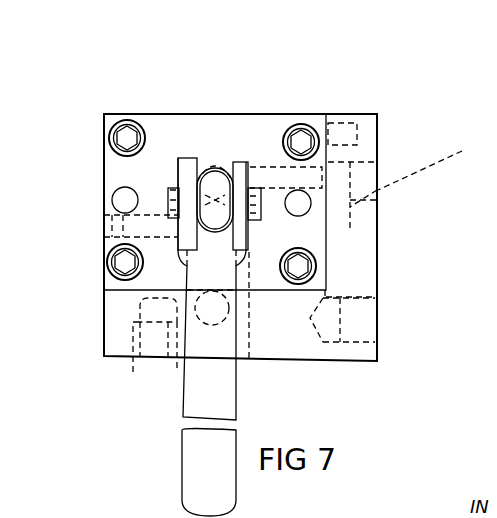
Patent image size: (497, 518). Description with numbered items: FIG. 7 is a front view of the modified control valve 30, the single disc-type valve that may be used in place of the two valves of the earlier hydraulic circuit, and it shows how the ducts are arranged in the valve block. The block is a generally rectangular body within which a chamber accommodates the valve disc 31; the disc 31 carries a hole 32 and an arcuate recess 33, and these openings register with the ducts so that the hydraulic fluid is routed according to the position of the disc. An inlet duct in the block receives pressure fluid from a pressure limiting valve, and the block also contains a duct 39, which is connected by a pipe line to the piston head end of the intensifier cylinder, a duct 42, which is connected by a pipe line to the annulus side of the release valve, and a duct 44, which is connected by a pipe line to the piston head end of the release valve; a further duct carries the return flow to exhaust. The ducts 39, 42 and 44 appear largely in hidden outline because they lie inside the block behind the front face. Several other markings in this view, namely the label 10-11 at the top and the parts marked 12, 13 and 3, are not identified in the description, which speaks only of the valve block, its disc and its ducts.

The clamp arm assembly 10-11 is at (178, 158).
The base plate 12 is at (293, 125).
The control valve 30 is at (138, 116).
The locating holes 13 is at (113, 193).
The duct 39 is at (417, 171).
The clamp jaw 3 is at (236, 162).
The valve disc 31 is at (215, 165).
The arcuate recess 33 is at (250, 186).
The hole 32 is at (175, 261).
The duct 44 is at (132, 360).
The duct 42 is at (247, 355).